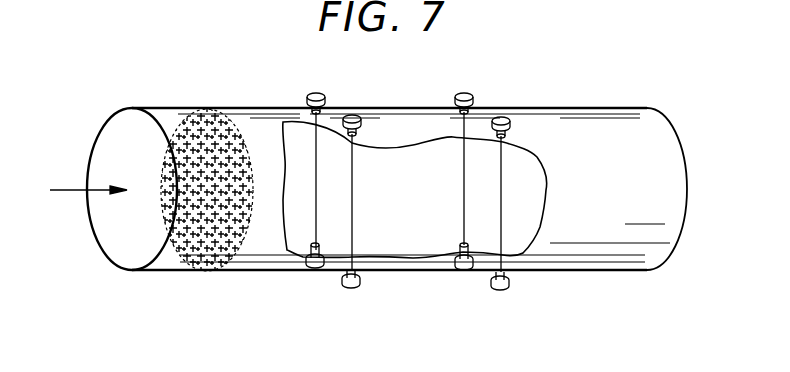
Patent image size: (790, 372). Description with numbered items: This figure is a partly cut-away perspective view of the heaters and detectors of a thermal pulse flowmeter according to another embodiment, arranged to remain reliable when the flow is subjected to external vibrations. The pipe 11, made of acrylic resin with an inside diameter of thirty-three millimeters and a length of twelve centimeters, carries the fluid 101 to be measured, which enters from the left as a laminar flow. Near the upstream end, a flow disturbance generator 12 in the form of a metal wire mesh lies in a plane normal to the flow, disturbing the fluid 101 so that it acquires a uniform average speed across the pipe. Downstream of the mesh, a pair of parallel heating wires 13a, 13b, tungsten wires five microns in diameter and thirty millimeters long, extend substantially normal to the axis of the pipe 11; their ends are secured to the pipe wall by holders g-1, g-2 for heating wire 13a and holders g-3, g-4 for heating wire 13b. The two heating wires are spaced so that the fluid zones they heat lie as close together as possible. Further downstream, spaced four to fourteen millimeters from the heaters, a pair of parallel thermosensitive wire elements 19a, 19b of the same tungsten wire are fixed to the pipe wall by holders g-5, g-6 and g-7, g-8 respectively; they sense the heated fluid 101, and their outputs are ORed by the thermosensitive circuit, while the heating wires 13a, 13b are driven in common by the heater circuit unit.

The pipe 11 is at (612, 110).
The flow disturbance generator 12 is at (226, 112).
The heating wire 13a is at (355, 217).
The heating wire 13b is at (320, 175).
The thermosensitive wire element 19a is at (503, 227).
The thermosensitive wire element 19b is at (463, 177).
The holder g-1 is at (353, 114).
The holder g-2 is at (357, 286).
The holder g-3 is at (311, 93).
The holder g-4 is at (303, 270).
The holder g-5 is at (500, 117).
The holder g-6 is at (507, 286).
The holder g-7 is at (466, 93).
The holder g-8 is at (458, 272).
The fluid 101 is at (60, 191).